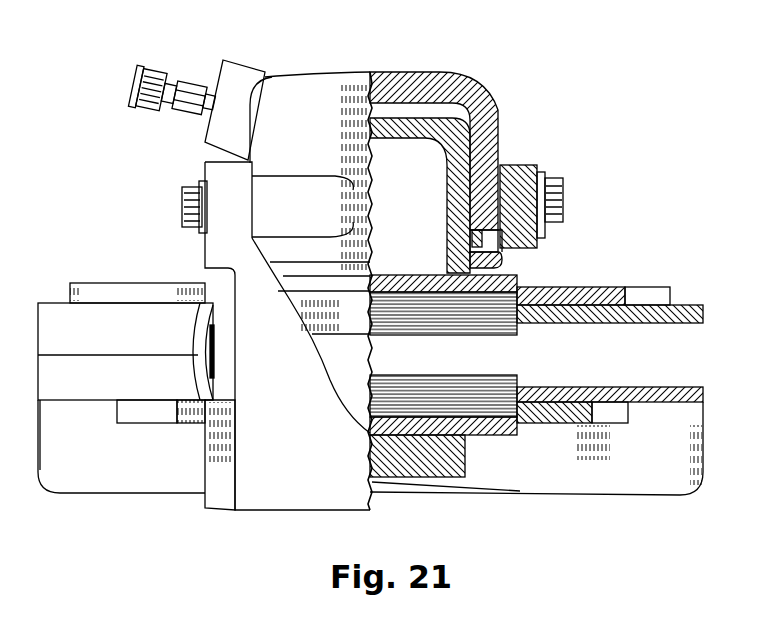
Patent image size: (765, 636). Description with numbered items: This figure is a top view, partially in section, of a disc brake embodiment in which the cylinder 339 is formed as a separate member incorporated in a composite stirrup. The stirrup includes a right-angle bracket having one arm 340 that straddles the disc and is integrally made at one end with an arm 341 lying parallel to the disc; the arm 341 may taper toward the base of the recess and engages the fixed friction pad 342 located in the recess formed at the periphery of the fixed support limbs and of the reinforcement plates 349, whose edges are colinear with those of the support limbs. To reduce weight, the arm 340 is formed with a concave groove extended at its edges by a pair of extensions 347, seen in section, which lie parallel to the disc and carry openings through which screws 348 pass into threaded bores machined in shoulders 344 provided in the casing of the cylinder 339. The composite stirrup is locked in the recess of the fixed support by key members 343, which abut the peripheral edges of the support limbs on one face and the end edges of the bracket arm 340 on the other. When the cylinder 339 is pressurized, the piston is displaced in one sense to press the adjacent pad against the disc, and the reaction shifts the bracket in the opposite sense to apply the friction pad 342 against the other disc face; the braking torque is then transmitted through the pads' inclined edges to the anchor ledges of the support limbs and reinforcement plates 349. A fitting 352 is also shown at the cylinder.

The cylinder 339 is at (483, 110).
The angle bracket arm 340 is at (270, 500).
The angle bracket arm 341 is at (452, 206).
The fixed friction pad 342 is at (518, 380).
The key member 343 is at (194, 420).
The shoulder 344 is at (298, 186).
The extension 347 is at (518, 236).
The screw 348 is at (182, 206).
The reinforcement plate 349 is at (128, 418).
The fitting 352 is at (156, 60).